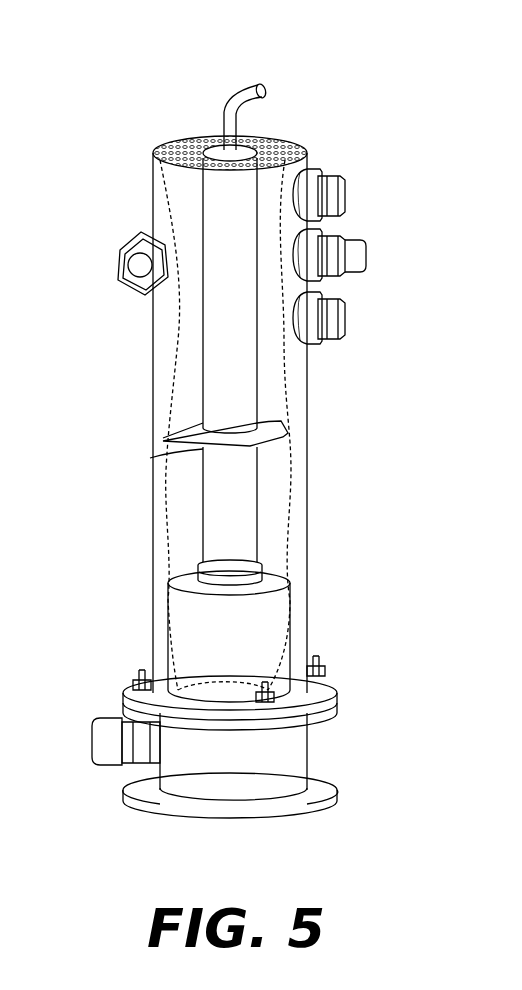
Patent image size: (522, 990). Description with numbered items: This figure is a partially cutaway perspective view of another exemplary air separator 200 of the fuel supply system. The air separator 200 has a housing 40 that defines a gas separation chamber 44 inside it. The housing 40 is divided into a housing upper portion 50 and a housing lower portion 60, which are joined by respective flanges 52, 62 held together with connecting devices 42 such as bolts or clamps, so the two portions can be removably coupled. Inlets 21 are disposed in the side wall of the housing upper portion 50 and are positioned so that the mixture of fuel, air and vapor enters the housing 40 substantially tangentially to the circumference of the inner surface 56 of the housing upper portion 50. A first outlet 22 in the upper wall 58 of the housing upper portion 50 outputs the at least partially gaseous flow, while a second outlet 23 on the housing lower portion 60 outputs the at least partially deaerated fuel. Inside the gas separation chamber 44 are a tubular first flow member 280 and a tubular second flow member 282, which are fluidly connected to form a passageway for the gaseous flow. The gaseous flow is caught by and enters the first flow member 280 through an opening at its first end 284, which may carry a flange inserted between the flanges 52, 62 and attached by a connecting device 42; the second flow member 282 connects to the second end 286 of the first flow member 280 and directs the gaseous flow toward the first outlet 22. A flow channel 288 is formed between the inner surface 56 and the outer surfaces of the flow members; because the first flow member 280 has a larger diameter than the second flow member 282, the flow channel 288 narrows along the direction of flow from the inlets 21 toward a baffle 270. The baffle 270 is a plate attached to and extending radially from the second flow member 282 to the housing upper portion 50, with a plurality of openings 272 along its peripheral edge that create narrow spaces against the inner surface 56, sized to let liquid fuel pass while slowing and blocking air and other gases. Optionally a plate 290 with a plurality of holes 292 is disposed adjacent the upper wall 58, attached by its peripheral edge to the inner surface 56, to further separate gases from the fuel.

The air separator 200 is at (348, 80).
The first outlet 22 is at (240, 86).
The housing upper portion 50 is at (283, 147).
The upper wall 58 is at (297, 150).
The plate 290 is at (183, 150).
The holes 292 is at (160, 148).
The inlet 21 is at (118, 265).
The gas separation chamber 44 is at (182, 343).
The second flow member 282 is at (247, 355).
The openings 272 is at (163, 437).
The baffle 270 is at (290, 427).
The housing 40 is at (348, 459).
The inner surface 56 is at (180, 497).
The second end 286 is at (283, 570).
The flow channel 288 is at (156, 622).
The first flow member 280 is at (262, 605).
The first end 284 is at (156, 655).
The connecting devices 42 is at (127, 684).
The flange 52 is at (338, 689).
The flange 62 is at (338, 708).
The housing lower portion 60 is at (307, 745).
The second outlet 23 is at (105, 766).